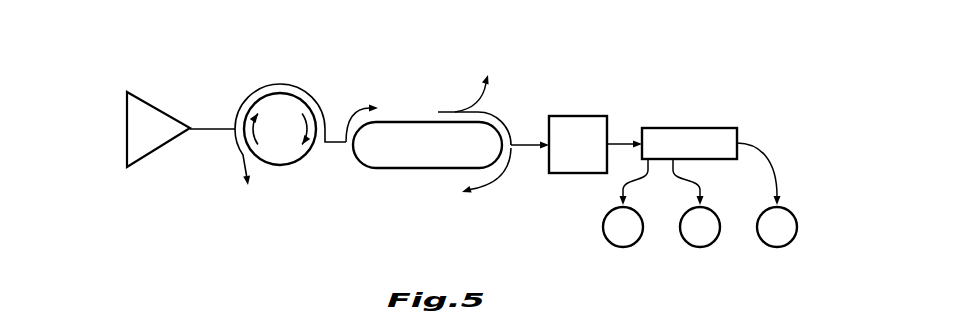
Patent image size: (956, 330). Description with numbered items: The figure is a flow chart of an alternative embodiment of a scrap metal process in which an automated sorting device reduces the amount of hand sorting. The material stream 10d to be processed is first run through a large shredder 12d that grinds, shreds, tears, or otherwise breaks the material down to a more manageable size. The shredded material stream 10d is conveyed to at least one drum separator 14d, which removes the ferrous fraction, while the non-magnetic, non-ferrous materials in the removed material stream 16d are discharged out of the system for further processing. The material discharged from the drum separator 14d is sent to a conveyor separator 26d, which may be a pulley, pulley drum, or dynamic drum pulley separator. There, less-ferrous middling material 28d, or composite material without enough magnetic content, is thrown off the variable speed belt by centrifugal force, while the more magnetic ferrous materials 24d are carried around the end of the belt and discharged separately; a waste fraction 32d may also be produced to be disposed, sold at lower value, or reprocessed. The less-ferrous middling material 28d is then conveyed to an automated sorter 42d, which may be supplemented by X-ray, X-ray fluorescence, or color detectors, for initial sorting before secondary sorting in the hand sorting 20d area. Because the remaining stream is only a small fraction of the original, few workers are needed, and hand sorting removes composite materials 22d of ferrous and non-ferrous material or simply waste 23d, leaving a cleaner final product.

The material stream 10d is at (118, 129).
The shredder 12d is at (147, 143).
The drum separator 14d is at (290, 152).
The removed material stream 16d is at (250, 173).
The conveyor separator 26d is at (370, 152).
The waste fraction 32d is at (474, 95).
The ferrous materials 24d is at (465, 178).
The less-ferrous middling material 28d is at (530, 140).
The automated sorter 42d is at (568, 166).
The hand sorting 20d is at (672, 137).
The waste 23d is at (625, 239).
The composite materials 22d is at (703, 239).